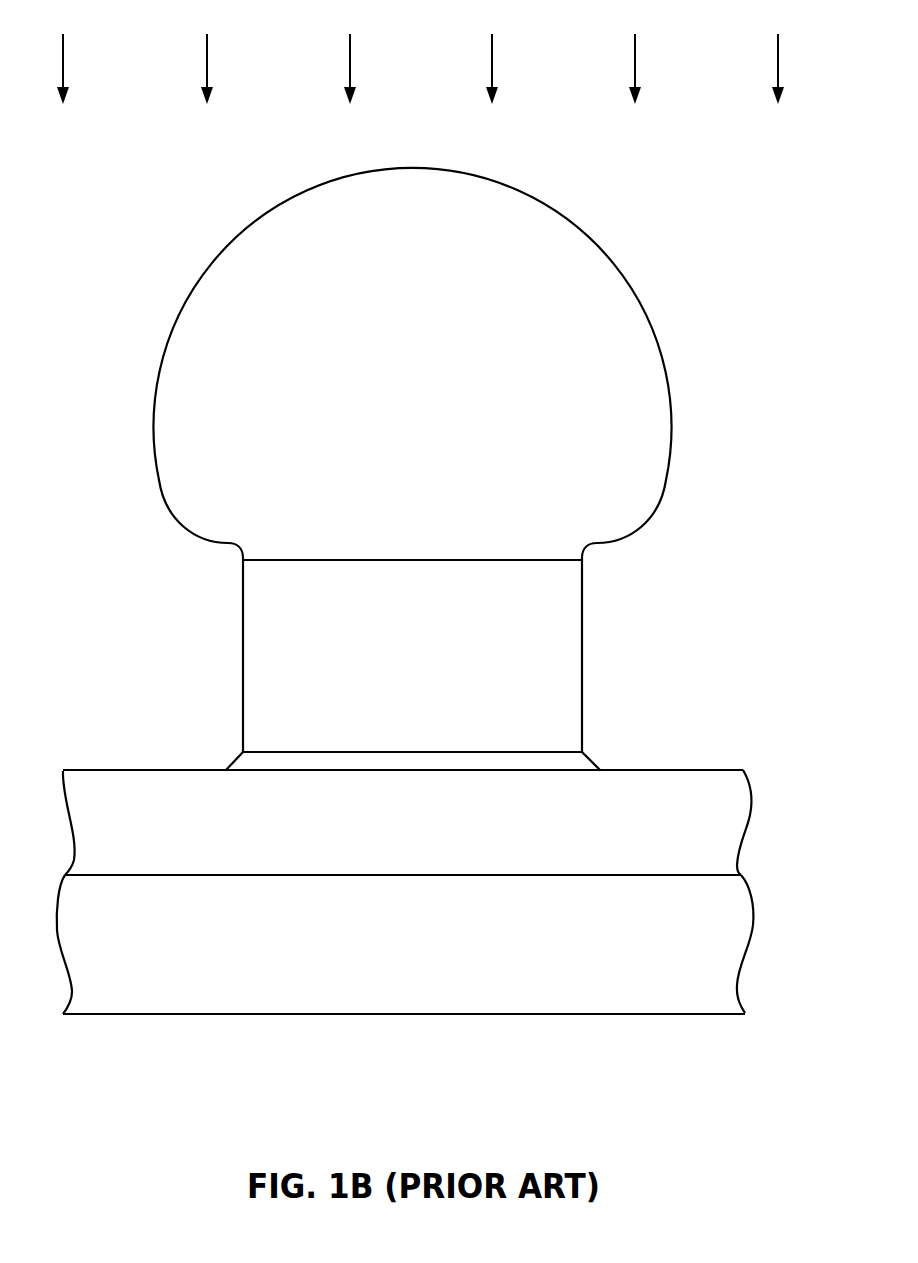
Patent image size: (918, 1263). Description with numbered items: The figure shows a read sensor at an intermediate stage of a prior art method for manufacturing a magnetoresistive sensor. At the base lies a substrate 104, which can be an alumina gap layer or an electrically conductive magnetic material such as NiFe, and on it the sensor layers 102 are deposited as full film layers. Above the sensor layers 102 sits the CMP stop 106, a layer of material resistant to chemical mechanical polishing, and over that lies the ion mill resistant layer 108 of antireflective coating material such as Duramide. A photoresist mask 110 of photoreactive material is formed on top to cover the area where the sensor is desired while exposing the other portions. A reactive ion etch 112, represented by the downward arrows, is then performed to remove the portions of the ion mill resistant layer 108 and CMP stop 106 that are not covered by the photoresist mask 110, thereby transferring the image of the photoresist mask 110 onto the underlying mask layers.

The sensor layers 102 is at (407, 822).
The substrate 104 is at (405, 944).
The CMP stop 106 is at (541, 760).
The ion mill resistant layer 108 is at (412, 655).
The photoresist mask 110 is at (413, 363).
The reactive ion etch 112 is at (63, 52).